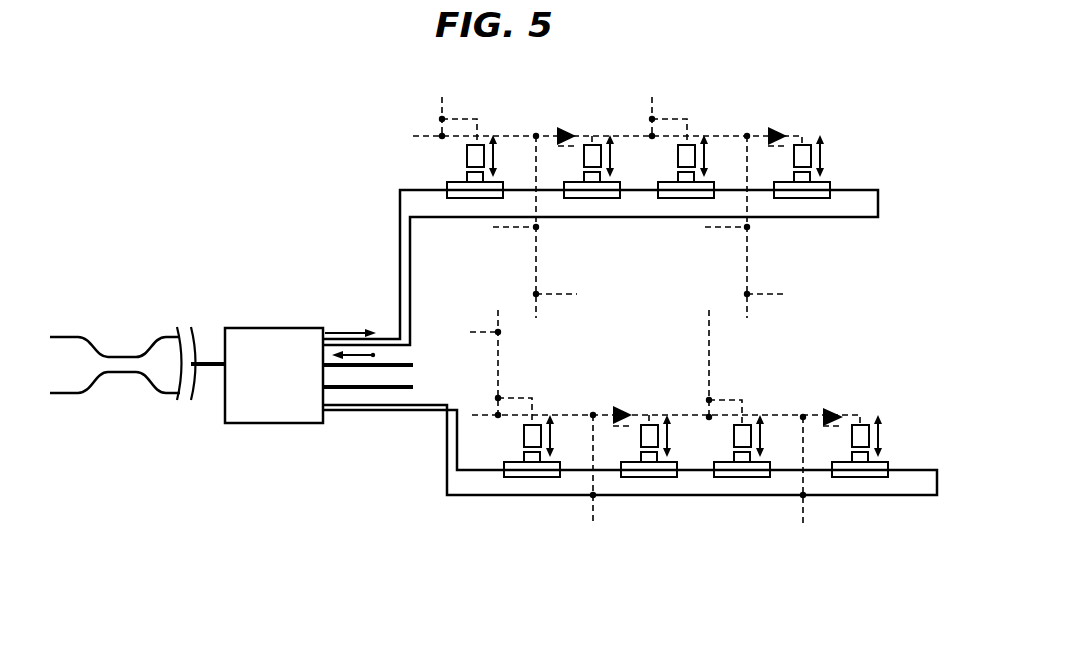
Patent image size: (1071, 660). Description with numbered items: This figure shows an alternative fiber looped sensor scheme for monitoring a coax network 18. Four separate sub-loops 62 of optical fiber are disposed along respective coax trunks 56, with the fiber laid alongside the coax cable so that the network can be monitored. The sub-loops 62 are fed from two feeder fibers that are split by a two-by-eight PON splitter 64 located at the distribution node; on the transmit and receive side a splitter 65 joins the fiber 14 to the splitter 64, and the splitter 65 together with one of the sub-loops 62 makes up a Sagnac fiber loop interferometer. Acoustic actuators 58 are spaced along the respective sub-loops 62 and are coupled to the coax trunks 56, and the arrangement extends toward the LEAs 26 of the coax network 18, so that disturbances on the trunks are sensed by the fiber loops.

The optical fiber 14 is at (219, 361).
The coax network 18 is at (864, 322).
The LEA 26 is at (571, 132).
The coax trunk 56 is at (497, 133).
The acoustic actuator 58 is at (470, 199).
The sub-loop 62 is at (425, 363).
The 2×8 PON splitter 64 is at (279, 423).
The splitter 65 is at (152, 319).